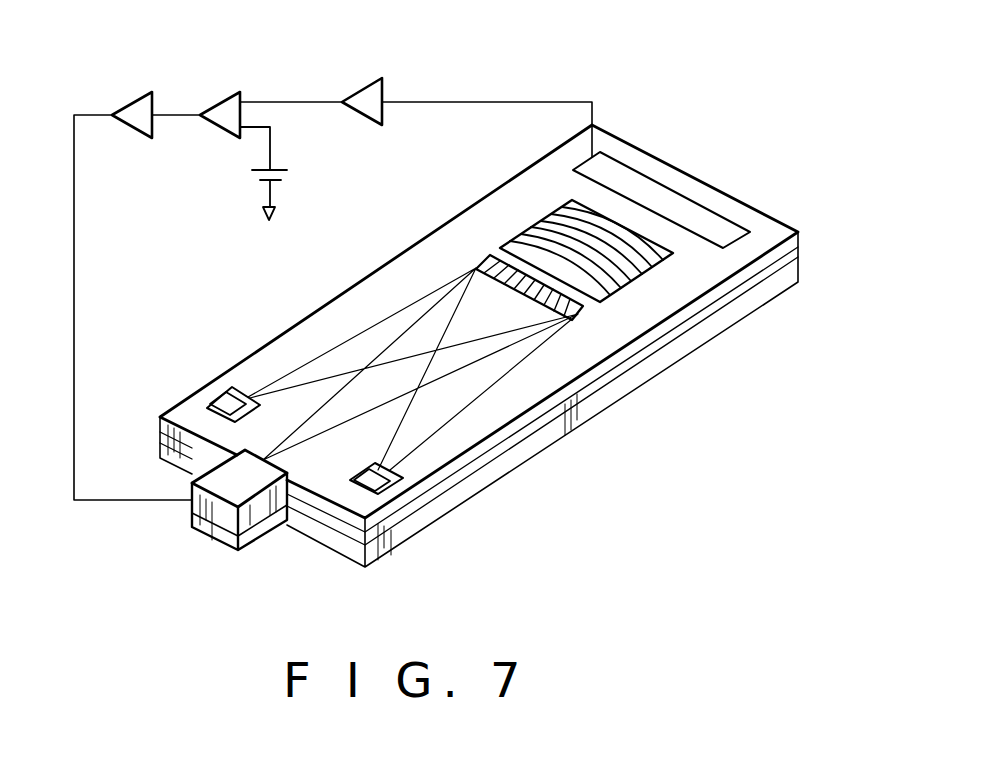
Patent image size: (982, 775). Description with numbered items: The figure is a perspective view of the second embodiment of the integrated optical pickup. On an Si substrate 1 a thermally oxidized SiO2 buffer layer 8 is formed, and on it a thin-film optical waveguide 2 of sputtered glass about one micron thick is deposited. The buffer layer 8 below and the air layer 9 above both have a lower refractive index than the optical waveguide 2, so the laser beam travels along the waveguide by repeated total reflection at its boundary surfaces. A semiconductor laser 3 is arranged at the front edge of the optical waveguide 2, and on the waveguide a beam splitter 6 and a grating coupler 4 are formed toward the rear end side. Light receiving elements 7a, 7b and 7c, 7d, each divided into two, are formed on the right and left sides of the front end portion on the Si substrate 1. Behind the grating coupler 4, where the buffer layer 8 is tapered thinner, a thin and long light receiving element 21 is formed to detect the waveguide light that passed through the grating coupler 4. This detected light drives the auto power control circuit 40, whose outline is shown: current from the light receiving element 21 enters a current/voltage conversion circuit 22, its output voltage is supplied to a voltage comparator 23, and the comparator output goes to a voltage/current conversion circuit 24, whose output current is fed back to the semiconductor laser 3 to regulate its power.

The Si substrate 1 is at (546, 436).
The optical waveguide 2 is at (783, 240).
The semiconductor laser 3 is at (228, 490).
The grating coupler 4 is at (650, 267).
The beam splitter 6 is at (588, 312).
The light receiving element 7a is at (225, 400).
The light receiving element 7b is at (217, 402).
The light receiving element 7c is at (353, 489).
The light receiving element 7d is at (387, 486).
The buffer layer 8 is at (800, 245).
The air layer 9 is at (347, 231).
The light receiving element 21 is at (653, 192).
The current/voltage conversion circuit 22 is at (372, 96).
The voltage comparator 23 is at (230, 100).
The voltage/current conversion circuit 24 is at (137, 105).
The auto power control (APC) circuit 40 is at (327, 72).